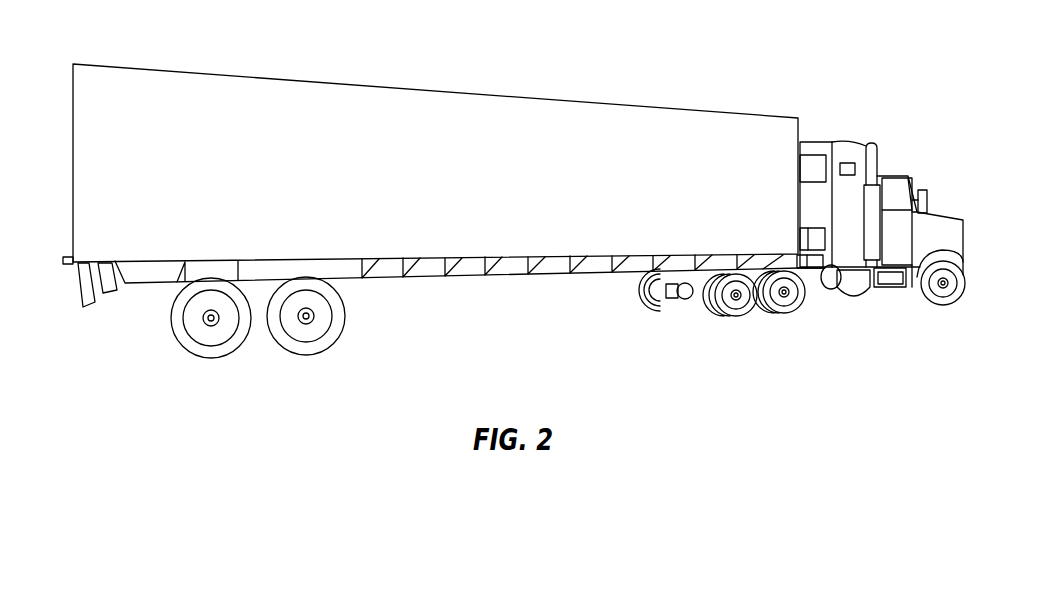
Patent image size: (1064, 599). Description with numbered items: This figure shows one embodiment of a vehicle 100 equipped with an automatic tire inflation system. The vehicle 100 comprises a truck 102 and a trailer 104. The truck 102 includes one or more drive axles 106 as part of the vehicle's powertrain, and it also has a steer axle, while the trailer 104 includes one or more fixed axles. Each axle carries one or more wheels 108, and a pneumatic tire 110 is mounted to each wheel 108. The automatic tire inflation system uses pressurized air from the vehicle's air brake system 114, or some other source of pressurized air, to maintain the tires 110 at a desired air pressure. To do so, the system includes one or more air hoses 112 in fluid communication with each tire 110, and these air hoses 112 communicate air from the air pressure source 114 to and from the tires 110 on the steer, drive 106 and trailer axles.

The vehicle 100 is at (805, 42).
The truck 102 is at (816, 141).
The trailer 104 is at (436, 90).
The drive axle 106 is at (684, 299).
The wheel 108 is at (191, 340).
The pneumatic tire 110 is at (212, 358).
The air hose 112 is at (206, 316).
The air brake system 114 is at (893, 287).